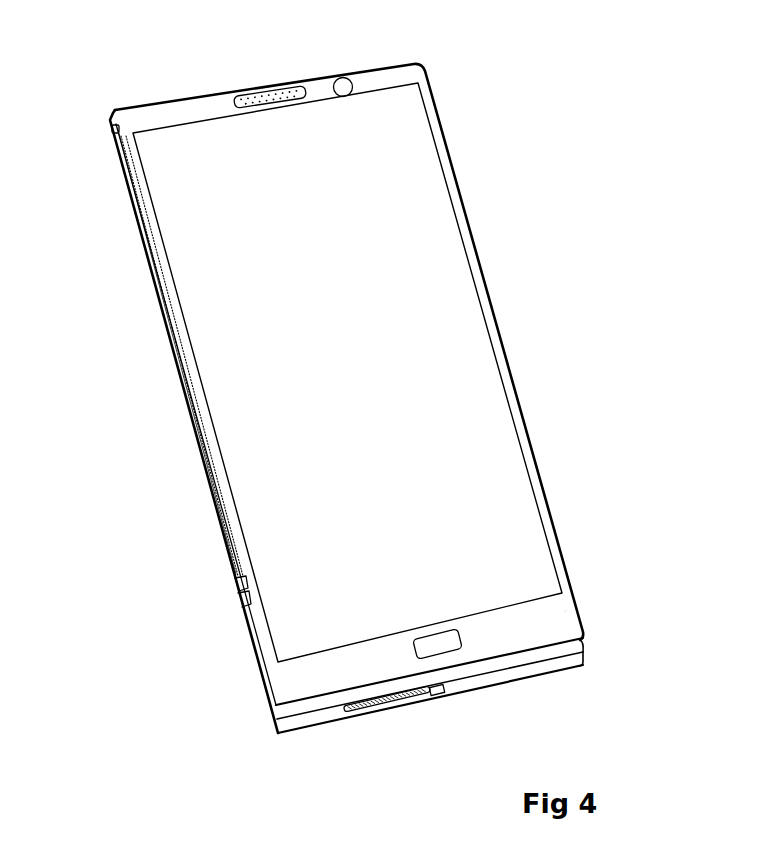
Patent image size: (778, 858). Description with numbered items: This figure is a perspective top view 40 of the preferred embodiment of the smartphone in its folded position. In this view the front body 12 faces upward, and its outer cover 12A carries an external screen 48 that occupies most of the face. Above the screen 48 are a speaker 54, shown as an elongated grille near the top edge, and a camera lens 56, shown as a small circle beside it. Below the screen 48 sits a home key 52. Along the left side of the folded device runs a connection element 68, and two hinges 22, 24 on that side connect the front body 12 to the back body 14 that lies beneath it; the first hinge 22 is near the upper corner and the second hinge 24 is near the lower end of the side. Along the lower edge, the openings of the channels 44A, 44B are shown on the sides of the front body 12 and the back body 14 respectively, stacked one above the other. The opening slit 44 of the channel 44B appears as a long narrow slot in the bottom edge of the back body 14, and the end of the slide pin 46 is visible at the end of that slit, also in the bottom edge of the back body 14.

The perspective view 40 is at (472, 88).
The front body 12 is at (568, 648).
The outer cover 12A is at (562, 610).
The back body 14 is at (538, 668).
The hinge 22 is at (111, 130).
The hinge 24 is at (238, 590).
The opening slit 44 is at (350, 712).
The channel 44A is at (278, 706).
The channel 44B is at (278, 721).
The slide pin 46 is at (436, 698).
The external screen 48 is at (466, 370).
The home key 52 is at (450, 655).
The speaker 54 is at (273, 92).
The camera lens 56 is at (343, 77).
The connection element 68 is at (152, 290).